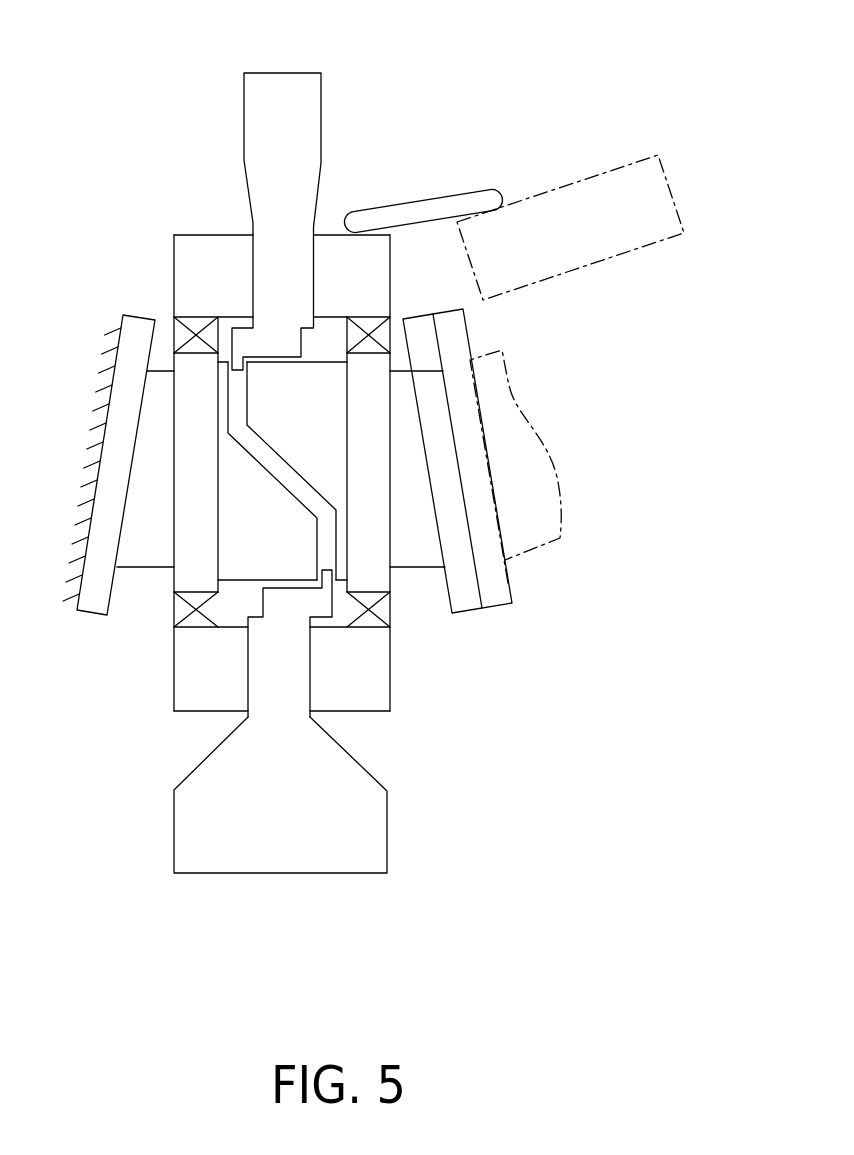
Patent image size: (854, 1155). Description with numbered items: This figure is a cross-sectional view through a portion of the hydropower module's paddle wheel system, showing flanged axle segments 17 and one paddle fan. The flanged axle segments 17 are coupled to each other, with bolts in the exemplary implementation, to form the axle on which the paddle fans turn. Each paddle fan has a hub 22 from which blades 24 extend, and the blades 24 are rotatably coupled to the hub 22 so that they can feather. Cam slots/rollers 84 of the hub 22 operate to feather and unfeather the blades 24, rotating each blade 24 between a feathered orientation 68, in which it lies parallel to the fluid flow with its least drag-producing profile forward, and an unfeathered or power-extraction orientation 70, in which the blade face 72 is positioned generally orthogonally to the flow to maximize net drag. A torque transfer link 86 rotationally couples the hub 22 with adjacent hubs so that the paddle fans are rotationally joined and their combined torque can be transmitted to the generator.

The flanged axle segments 17 is at (143, 537).
The hub 22 is at (188, 268).
The blade 24 is at (243, 137).
The feathered orientation 68 is at (352, 52).
The unfeathered or power-extraction orientation 70 is at (132, 861).
The blade face 72 is at (285, 825).
The cam slots/rollers 84 is at (306, 385).
The torque transfer link 86 is at (420, 197).